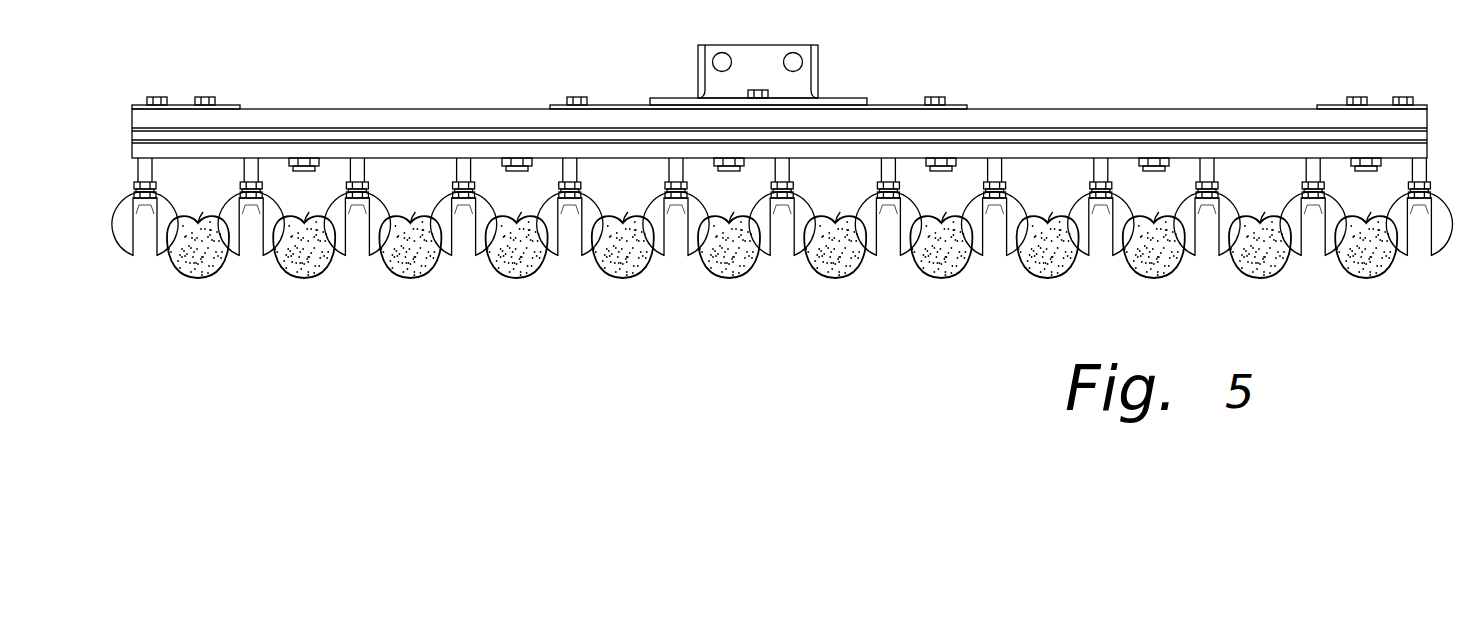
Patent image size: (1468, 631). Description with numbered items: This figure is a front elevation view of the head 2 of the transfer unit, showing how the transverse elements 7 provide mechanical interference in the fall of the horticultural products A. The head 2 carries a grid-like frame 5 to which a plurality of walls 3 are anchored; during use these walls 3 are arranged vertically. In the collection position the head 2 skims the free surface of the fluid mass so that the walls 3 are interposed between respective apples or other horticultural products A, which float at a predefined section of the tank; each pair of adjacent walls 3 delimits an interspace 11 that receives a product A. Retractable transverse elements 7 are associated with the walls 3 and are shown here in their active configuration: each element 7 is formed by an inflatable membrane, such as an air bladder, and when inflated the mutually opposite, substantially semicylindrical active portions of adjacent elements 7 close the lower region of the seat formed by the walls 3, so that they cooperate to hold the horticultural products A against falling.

The head 2 is at (1014, 102).
The walls 3 is at (142, 227).
The grid-like frame 5 is at (1253, 132).
The transverse elements 7 is at (128, 305).
The interspace 11 is at (197, 303).
The horticultural products A is at (205, 232).